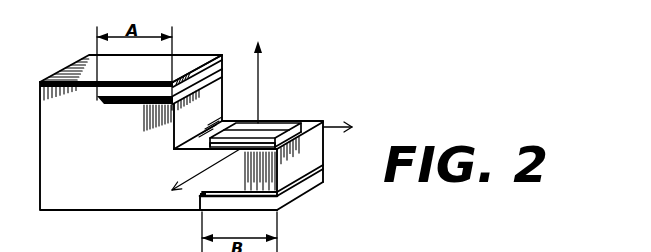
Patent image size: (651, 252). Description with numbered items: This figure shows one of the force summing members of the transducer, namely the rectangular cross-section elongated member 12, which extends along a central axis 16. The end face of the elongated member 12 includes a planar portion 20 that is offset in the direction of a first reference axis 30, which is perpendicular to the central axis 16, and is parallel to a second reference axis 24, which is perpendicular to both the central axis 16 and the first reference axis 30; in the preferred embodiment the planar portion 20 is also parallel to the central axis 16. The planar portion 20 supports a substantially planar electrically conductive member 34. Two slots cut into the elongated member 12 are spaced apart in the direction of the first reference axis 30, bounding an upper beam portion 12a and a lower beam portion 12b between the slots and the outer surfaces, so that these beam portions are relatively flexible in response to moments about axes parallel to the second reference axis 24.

The elongated member 12 is at (92, 225).
The upper beam portion 12a is at (188, 62).
The lower beam portion 12b is at (250, 210).
The central axis 16 is at (325, 127).
The planar portion 20 is at (313, 120).
The second reference axis 24 is at (195, 176).
The first reference axis 30 is at (259, 67).
The planar electrically conductive member 34 is at (279, 118).